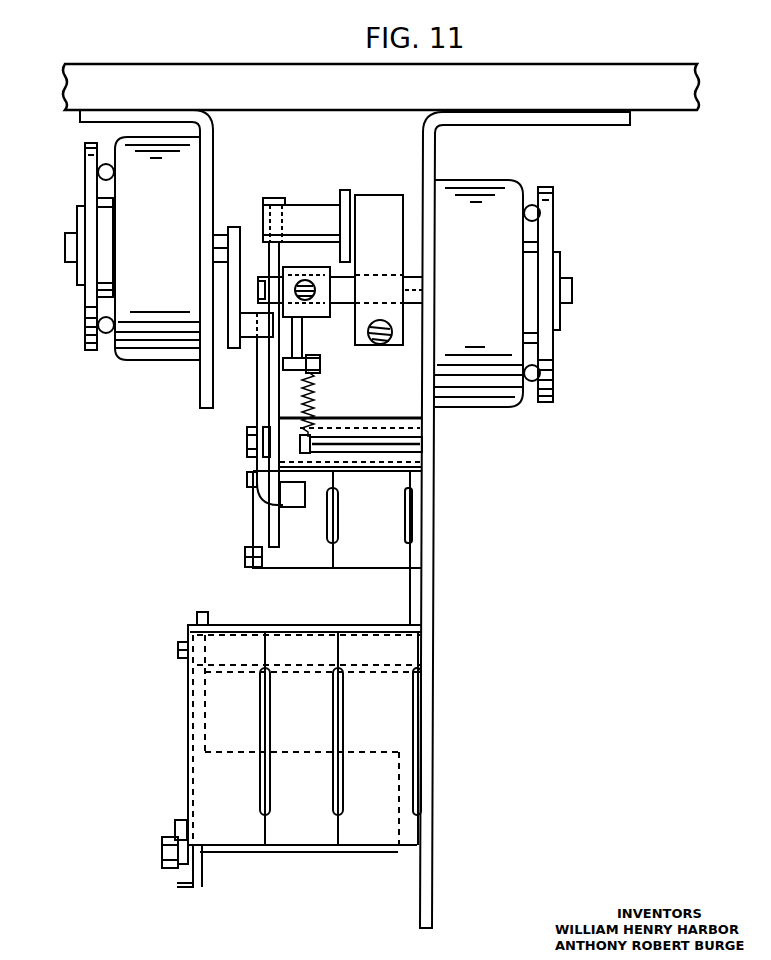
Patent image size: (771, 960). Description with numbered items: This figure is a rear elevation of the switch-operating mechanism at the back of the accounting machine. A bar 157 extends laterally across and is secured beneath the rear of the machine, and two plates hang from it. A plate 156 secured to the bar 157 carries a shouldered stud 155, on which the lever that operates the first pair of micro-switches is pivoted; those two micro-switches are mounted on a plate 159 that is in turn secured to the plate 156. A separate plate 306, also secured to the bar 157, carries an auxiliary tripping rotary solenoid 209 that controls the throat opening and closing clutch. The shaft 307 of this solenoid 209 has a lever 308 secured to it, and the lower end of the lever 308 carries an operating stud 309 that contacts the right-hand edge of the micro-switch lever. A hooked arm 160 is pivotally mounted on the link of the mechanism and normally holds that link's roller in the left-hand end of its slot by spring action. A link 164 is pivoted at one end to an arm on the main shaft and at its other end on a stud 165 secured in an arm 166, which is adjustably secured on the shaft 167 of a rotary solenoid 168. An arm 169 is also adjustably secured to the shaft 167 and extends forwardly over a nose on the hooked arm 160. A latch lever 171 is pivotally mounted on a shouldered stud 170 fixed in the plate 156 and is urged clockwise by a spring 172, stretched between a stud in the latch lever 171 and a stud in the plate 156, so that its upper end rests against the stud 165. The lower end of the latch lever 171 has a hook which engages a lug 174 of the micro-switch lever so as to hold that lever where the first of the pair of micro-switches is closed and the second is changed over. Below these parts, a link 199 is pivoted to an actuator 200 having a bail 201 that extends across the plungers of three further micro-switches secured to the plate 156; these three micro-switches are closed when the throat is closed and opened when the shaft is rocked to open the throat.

The bar 157 is at (257, 76).
The plate 306 is at (213, 165).
The shaft 307 is at (229, 236).
The lever 308 is at (236, 291).
The operating stud 309 is at (257, 338).
The auxiliary tripping rotary solenoid 209 is at (168, 345).
The hooked arm 160 is at (274, 400).
The link 164 is at (345, 195).
The stud 165 is at (306, 218).
The arm 166 is at (383, 212).
The shaft 167 is at (412, 291).
The rotary solenoid 168 is at (455, 380).
The arm 169 is at (318, 318).
The shouldered stud 170 is at (380, 403).
The spring 172 is at (312, 403).
The shouldered stud 155 is at (252, 450).
The latch lever 171 is at (272, 511).
The lug 174 is at (299, 495).
The plate 159 is at (410, 606).
The plate 156 is at (424, 590).
The bail 201 is at (356, 752).
The link 199 is at (185, 872).
The actuator 200 is at (205, 880).